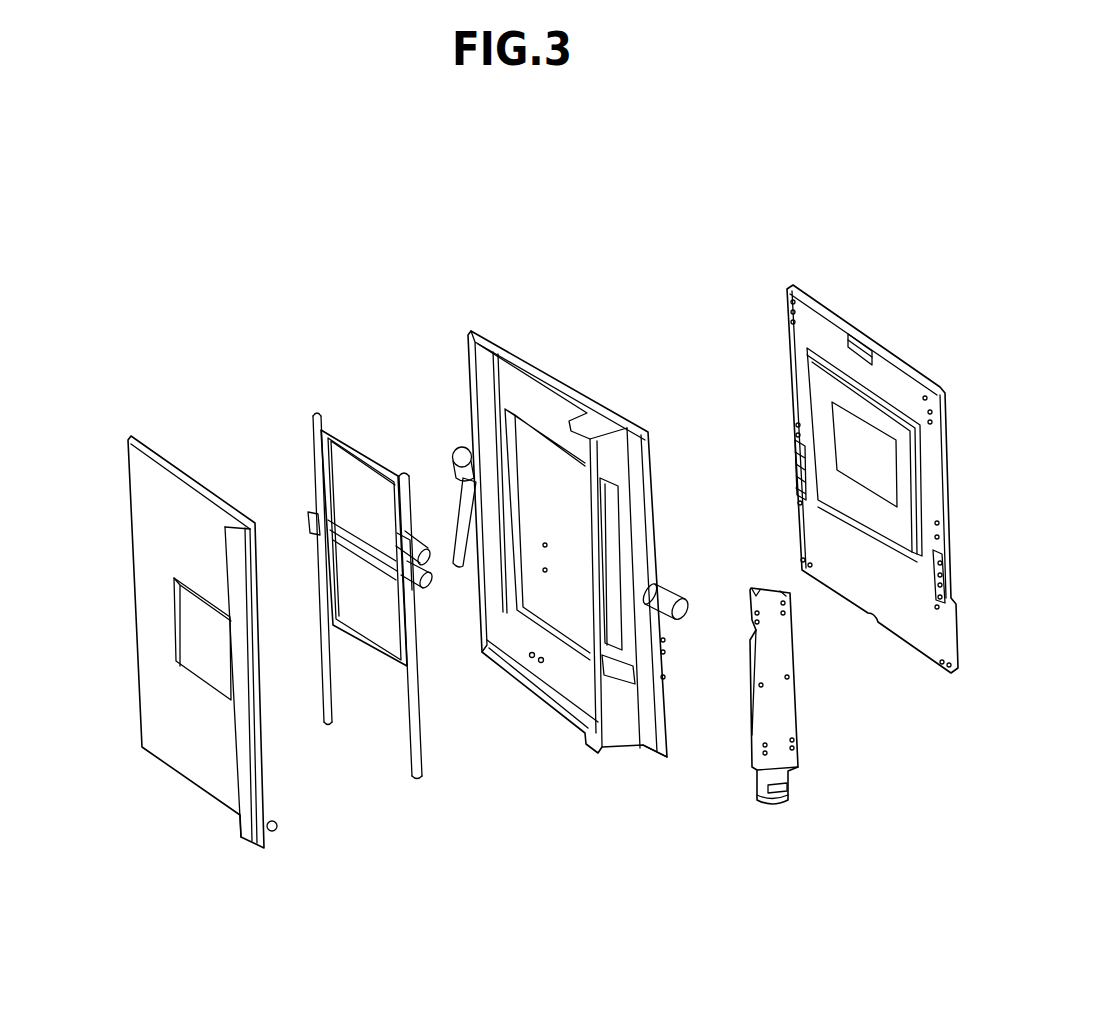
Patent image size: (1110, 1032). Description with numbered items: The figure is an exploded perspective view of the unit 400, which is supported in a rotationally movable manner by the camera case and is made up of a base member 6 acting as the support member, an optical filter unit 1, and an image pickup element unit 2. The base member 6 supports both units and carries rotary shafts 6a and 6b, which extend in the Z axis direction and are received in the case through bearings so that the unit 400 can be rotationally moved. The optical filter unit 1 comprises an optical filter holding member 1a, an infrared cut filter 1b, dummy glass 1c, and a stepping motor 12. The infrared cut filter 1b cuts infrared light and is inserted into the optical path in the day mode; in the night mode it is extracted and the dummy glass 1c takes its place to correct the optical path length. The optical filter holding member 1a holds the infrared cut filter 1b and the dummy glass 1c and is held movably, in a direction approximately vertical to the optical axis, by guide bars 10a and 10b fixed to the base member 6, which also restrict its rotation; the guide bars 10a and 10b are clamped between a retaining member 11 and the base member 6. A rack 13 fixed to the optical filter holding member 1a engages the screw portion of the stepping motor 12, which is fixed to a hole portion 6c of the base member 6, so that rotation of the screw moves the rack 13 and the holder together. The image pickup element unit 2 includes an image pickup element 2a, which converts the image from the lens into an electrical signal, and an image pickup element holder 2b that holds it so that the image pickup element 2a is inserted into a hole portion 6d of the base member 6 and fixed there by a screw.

The unit 400 is at (973, 125).
The retaining member 11 is at (176, 492).
The optical filter unit 1 is at (393, 390).
The optical filter holding member 1a is at (364, 657).
The infrared cut filter 1b is at (350, 600).
The dummy glass 1c is at (346, 488).
The guide bar 10a is at (330, 729).
The guide bar 10b is at (414, 786).
The rack 13 is at (414, 582).
The base member 6 is at (510, 385).
The rotary shaft 6a is at (680, 612).
The rotary shaft 6b is at (462, 449).
The hole portion 6c is at (598, 521).
The hole portion 6d is at (545, 480).
The stepping motor 12 is at (757, 742).
The image pickup element unit 2 is at (873, 628).
The image pickup element 2a is at (885, 450).
The image pickup element holder 2b is at (815, 332).